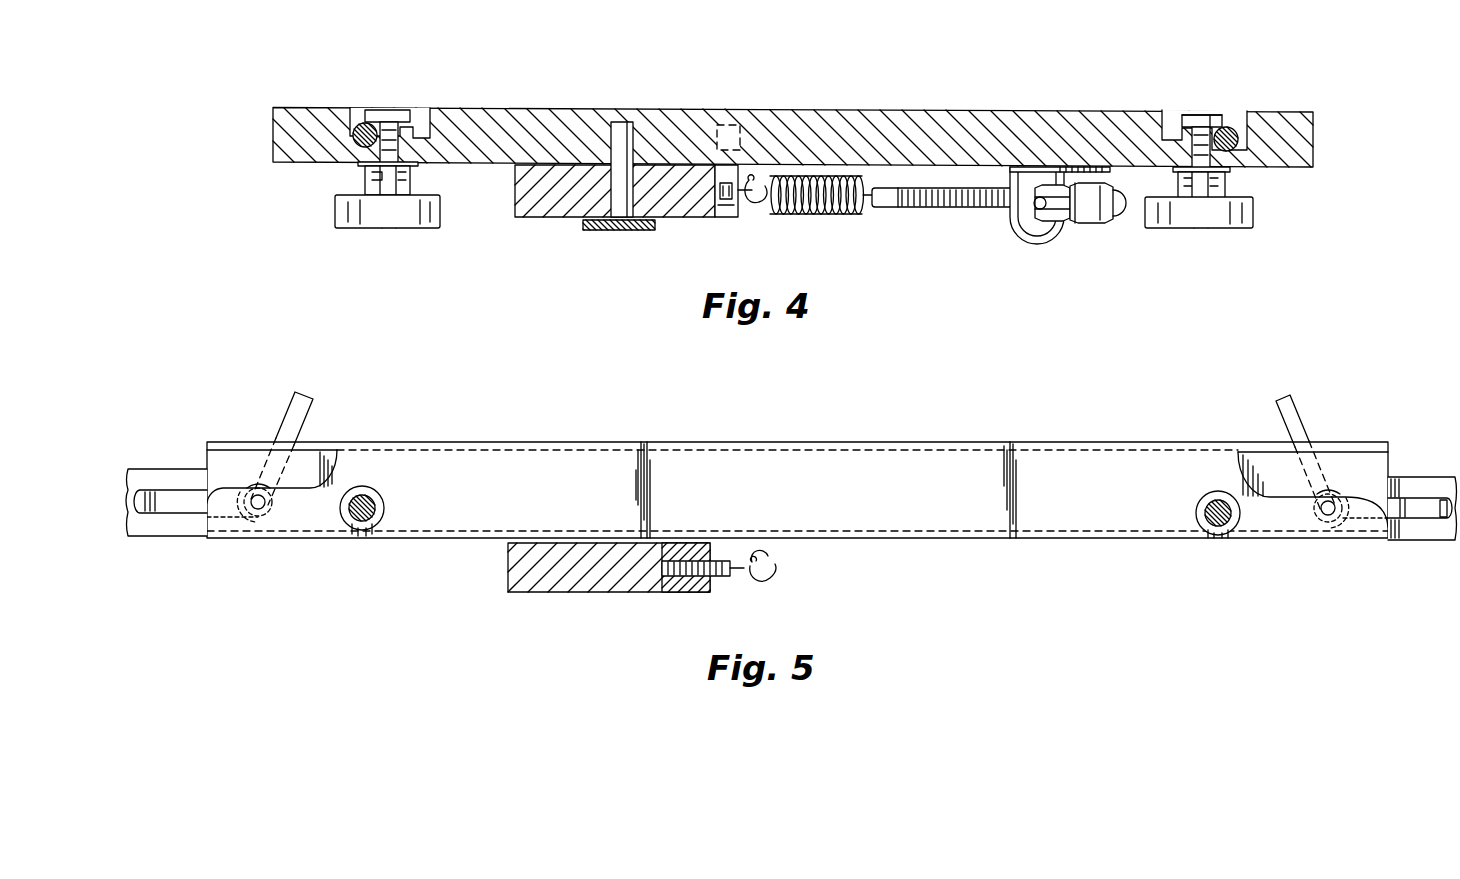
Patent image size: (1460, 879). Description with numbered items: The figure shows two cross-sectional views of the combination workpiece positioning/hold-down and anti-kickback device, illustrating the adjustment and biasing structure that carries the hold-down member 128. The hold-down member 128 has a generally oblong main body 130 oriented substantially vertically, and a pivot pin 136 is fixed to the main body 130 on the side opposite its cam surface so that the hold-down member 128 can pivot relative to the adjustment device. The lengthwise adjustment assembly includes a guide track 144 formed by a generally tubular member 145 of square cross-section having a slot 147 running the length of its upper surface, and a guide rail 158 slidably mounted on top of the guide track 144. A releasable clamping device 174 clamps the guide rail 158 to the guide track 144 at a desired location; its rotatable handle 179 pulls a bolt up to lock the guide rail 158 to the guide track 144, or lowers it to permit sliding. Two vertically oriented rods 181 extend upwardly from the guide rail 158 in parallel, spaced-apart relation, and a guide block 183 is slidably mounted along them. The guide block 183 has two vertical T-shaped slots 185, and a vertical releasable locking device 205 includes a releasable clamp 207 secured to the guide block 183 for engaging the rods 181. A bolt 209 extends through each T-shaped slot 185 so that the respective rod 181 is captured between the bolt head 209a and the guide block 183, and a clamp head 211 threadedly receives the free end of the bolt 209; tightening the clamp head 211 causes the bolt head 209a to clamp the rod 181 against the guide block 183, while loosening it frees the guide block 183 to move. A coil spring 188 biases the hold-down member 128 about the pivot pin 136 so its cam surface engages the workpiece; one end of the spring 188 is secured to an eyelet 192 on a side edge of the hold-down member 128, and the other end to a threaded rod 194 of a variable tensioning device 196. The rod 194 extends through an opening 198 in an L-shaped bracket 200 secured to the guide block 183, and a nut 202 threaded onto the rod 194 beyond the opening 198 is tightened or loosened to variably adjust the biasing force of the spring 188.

In FIG. 4, the hold-down member 128 is at (534, 230).
In FIG. 5, the hold-down member 128 is at (577, 600).
In FIG. 4, the main body 130 is at (682, 218).
In FIG. 4, the pivot pin 136 is at (622, 130).
In FIG. 5, the guide track 144 is at (184, 548).
In FIG. 5, the tubular member 145 is at (1418, 534).
In FIG. 5, the slot 147 is at (1443, 517).
In FIG. 5, the guide rail 158 is at (1045, 528).
In FIG. 5, the releasable clamping device 174 is at (260, 518).
In FIG. 5, the rotatable handle 179 is at (277, 434).
In FIG. 4, the vertically oriented rods 181 is at (365, 120).
In FIG. 5, the vertically oriented rods 181 is at (350, 531).
In FIG. 4, the guide block 183 is at (968, 111).
In FIG. 4, the T-shaped slots 185 is at (430, 135).
In FIG. 4, the coil spring 188 is at (818, 215).
In FIG. 5, the coil spring 188 is at (790, 566).
In FIG. 4, the eyelet 192 is at (760, 178).
In FIG. 5, the eyelet 192 is at (722, 578).
In FIG. 4, the threaded rod 194 is at (936, 210).
In FIG. 4, the variable tensioning device 196 is at (963, 233).
In FIG. 4, the opening 198 is at (1031, 245).
In FIG. 4, the L-shaped bracket 200 is at (1068, 226).
In FIG. 4, the nut 202 is at (1038, 184).
In FIG. 4, the vertical releasable locking device 205 is at (379, 241).
In FIG. 4, the releasable clamp 207 is at (417, 231).
In FIG. 4, the bolt 209 is at (1185, 158).
In FIG. 4, the bolt head 209a is at (1200, 117).
In FIG. 4, the clamp head 211 is at (345, 210).